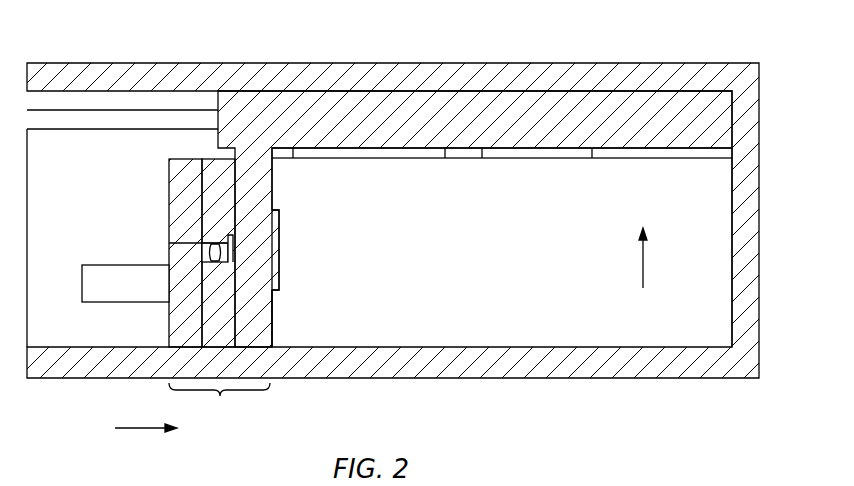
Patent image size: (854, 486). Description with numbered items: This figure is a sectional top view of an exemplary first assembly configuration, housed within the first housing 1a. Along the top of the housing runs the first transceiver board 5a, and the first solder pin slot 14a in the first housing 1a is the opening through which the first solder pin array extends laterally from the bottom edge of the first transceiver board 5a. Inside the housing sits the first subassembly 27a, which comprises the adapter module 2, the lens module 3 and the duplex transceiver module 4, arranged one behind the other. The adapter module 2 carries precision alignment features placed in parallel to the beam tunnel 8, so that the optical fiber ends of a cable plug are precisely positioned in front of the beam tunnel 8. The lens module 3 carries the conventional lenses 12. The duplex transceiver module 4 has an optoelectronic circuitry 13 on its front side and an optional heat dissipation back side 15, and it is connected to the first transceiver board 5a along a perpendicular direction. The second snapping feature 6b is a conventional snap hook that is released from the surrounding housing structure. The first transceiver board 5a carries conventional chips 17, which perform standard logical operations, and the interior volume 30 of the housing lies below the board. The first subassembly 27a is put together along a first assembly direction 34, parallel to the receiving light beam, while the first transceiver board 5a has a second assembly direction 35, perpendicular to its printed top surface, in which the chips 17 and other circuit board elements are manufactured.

The first housing 1a is at (320, 83).
The first transceiver board 5a is at (480, 101).
The first solder pin slot 14a is at (78, 106).
The lens module 3 is at (218, 164).
The chamber 30 is at (277, 159).
The chips 17 is at (535, 161).
The lenses 12 is at (215, 243).
The beam tunnel 8 is at (178, 262).
The optoelectronic circuitry 13 is at (235, 257).
The heat dissipation back side 15 is at (280, 258).
The second snapping feature 6b is at (107, 268).
The adapter module 2 is at (178, 341).
The duplex transceiver module 4 is at (268, 341).
The second assembly direction 35 is at (657, 258).
The first assembly direction 34 is at (146, 440).
The first subassembly 27a is at (219, 402).